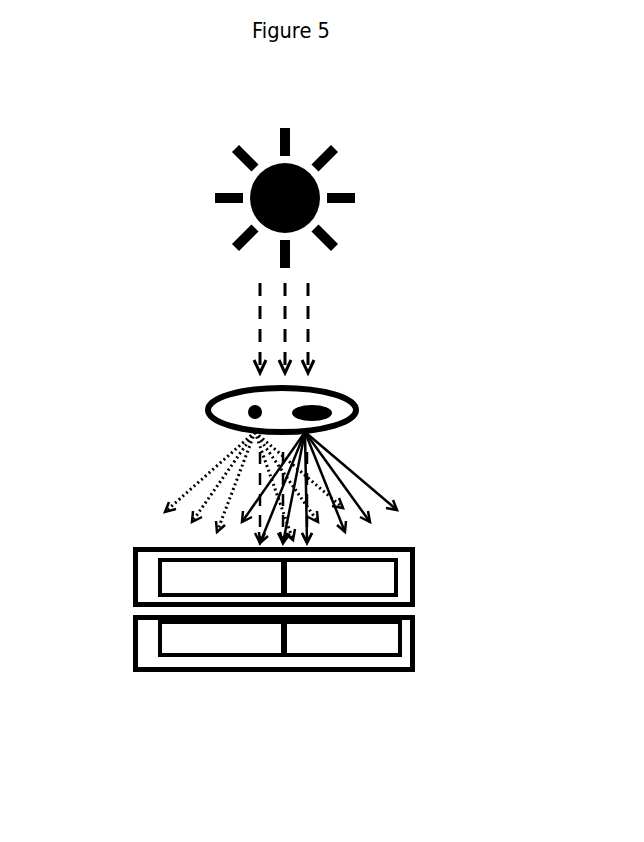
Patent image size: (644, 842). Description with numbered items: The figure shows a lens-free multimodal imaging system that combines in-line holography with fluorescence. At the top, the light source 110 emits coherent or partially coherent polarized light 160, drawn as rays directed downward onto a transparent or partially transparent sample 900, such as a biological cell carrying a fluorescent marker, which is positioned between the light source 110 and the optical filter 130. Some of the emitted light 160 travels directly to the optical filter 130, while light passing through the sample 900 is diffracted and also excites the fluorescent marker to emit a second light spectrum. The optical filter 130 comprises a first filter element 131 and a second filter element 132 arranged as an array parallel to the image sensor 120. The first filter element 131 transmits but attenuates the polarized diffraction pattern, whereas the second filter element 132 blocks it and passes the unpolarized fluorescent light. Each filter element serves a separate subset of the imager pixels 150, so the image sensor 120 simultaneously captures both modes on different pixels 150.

The light source 110 is at (196, 188).
The emitted light 160 is at (305, 320).
The sample 900 is at (200, 402).
The second filter element 132 is at (188, 571).
The first filter element 131 is at (369, 571).
The optical filter 130 is at (430, 568).
The image sensor 120 is at (430, 635).
The imager pixels 150 is at (334, 652).